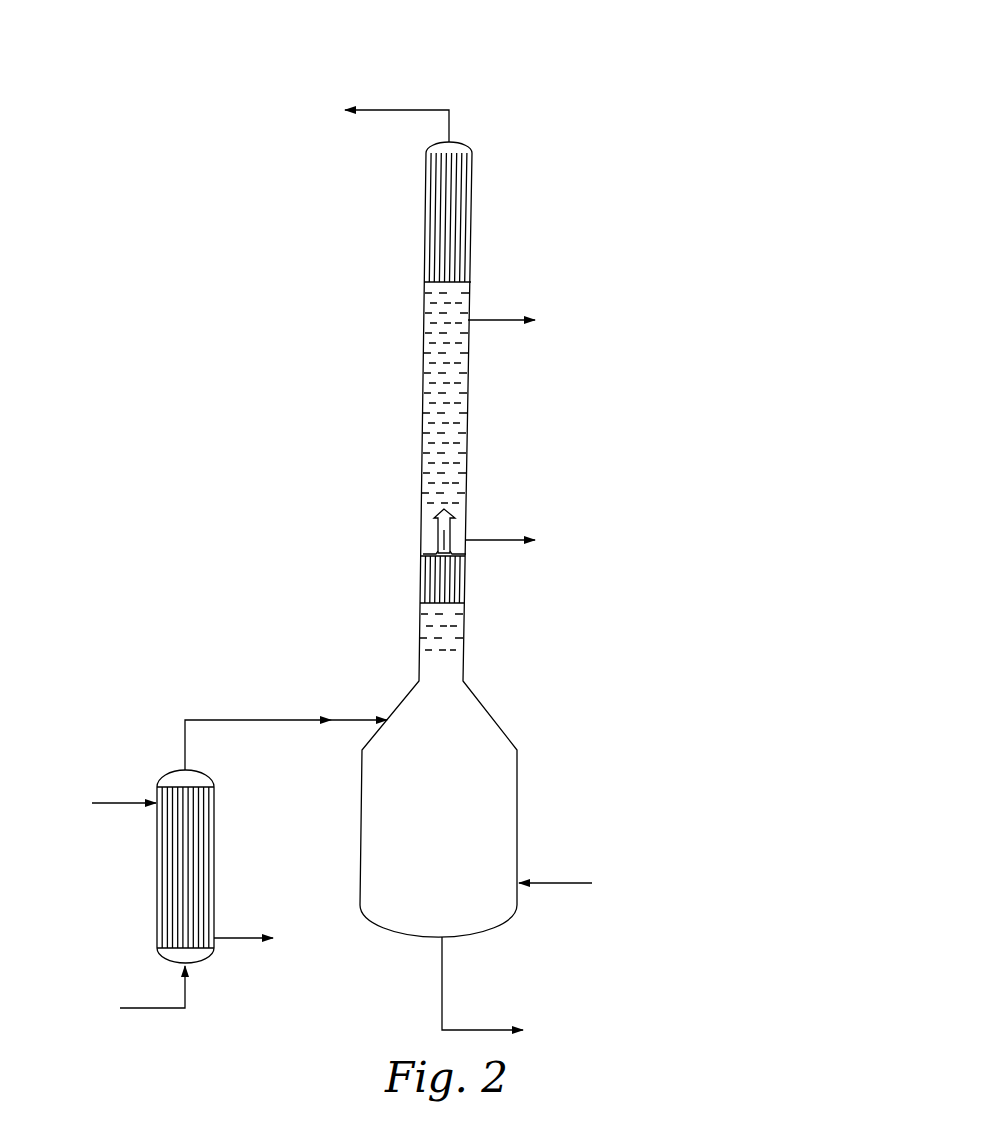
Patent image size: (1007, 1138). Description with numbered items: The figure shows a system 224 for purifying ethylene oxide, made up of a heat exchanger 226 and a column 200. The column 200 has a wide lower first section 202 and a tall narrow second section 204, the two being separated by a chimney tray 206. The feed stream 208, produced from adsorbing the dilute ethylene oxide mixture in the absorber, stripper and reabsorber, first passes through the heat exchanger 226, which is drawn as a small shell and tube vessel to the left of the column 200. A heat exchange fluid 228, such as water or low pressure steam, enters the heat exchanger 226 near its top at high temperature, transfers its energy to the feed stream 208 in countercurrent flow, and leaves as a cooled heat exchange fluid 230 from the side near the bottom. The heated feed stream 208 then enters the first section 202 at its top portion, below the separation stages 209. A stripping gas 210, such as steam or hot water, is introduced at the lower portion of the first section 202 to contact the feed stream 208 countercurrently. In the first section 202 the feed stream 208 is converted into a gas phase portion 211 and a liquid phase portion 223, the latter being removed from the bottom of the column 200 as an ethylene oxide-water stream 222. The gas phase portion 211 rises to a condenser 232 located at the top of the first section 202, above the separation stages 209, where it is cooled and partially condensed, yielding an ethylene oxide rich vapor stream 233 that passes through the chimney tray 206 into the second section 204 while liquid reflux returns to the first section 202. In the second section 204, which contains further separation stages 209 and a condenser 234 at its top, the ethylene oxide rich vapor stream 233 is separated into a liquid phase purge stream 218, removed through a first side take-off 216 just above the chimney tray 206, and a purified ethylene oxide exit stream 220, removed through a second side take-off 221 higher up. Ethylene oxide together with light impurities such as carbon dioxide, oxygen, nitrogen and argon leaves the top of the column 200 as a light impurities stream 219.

The column 200 is at (468, 434).
The first section 202 is at (517, 795).
The second section 204 is at (468, 383).
The chimney tray 206 is at (462, 553).
The feed stream 208 is at (271, 708).
The separation stages 209 is at (440, 640).
The stripping gas 210 is at (579, 884).
The gas phase portion 211 is at (445, 617).
The first side take-off 216 is at (465, 536).
The liquid phase purge stream 218 is at (521, 541).
The light impurities stream 219 is at (372, 120).
The purified ethylene oxide exit stream 220 is at (523, 321).
The second side take-off 221 is at (470, 312).
The ethylene oxide-water stream 222 is at (508, 990).
The liquid phase portion 223 is at (438, 822).
The system 224 is at (609, 70).
The heat exchanger 226 is at (214, 812).
The heat exchange fluid 228 is at (104, 804).
The cooled heat exchange fluid 230 is at (267, 939).
The condenser 232 is at (465, 592).
The ethylene oxide rich vapor stream 233 is at (432, 554).
The condenser 234 is at (472, 172).